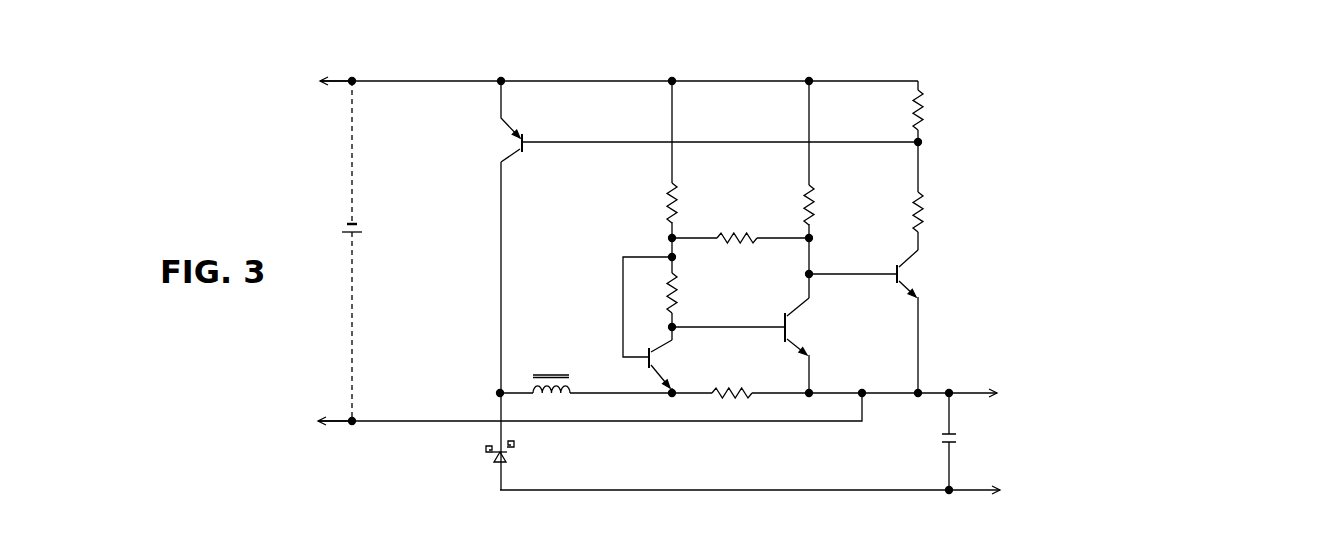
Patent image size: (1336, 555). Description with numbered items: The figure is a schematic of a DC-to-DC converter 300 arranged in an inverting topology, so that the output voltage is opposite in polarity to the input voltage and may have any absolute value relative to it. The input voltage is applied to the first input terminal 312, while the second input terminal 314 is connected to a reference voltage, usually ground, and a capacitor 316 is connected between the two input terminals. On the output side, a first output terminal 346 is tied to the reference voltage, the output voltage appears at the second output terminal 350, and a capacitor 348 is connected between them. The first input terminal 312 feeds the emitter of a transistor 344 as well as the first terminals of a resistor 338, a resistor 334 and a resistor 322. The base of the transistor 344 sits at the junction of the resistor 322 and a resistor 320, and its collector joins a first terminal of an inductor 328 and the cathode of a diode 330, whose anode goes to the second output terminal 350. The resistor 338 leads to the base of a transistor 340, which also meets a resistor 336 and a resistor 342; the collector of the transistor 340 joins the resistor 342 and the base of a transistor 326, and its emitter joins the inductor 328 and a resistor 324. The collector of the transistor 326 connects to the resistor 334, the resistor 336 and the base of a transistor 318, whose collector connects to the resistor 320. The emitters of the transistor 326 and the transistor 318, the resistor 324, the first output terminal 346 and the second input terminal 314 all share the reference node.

The DC-to-DC converter 300 is at (222, 76).
The first input terminal 312 is at (320, 78).
The second input terminal 314 is at (338, 398).
The capacitor 316 is at (349, 224).
The transistor 318 is at (909, 288).
The resistor 320 is at (923, 215).
The resistor 322 is at (923, 115).
The resistor 324 is at (748, 386).
The transistor 326 is at (802, 345).
The inductor 328 is at (570, 385).
The diode 330 is at (495, 458).
The resistor 334 is at (805, 196).
The resistor 336 is at (743, 242).
The resistor 338 is at (668, 196).
The transistor 340 is at (665, 371).
The resistor 342 is at (676, 294).
The transistor 344 is at (517, 132).
The first output terminal 346 is at (995, 392).
The capacitor 348 is at (949, 441).
The second output terminal 350 is at (995, 487).